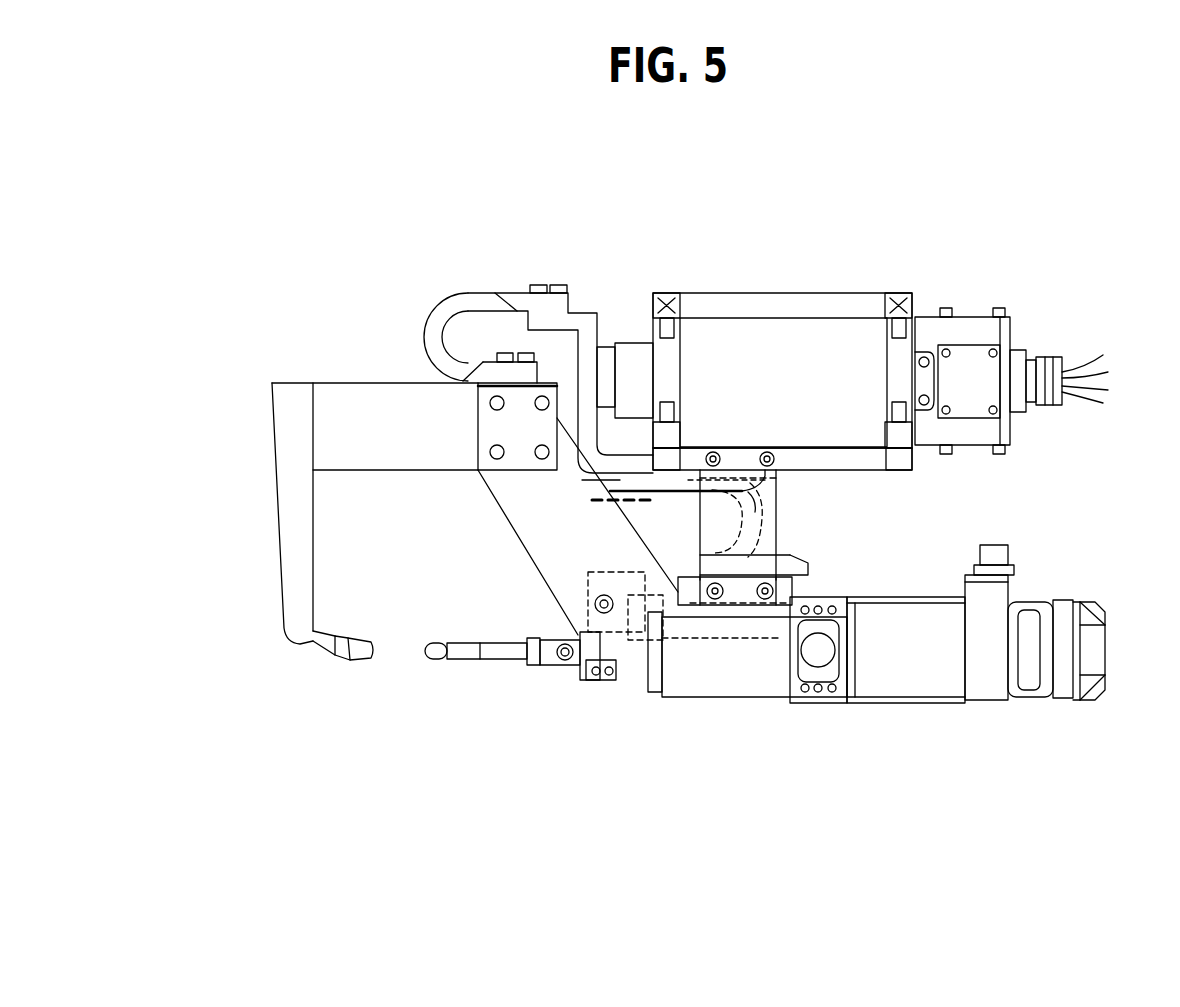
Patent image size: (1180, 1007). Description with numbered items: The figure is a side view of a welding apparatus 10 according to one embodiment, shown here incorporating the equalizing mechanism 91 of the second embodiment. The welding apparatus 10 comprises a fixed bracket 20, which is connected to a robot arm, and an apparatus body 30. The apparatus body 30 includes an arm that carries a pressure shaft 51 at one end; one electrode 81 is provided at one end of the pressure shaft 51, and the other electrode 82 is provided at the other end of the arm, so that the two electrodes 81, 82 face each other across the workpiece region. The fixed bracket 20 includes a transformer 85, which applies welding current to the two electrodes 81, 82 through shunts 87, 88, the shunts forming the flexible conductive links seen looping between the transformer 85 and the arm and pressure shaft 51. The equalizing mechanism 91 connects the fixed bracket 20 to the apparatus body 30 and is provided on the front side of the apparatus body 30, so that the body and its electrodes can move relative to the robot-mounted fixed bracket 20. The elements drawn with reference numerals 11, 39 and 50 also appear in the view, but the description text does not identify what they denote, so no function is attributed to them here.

The welding apparatus 10 is at (275, 201).
The fixed bracket 20 is at (1040, 223).
The apparatus body 30 is at (1027, 825).
The base plate 11 is at (768, 492).
The gun arm 39 is at (368, 405).
The pressurizing actuator 50 is at (814, 703).
The pressure shaft 51 is at (494, 661).
The electrode 81 is at (432, 661).
The electrode 82 is at (358, 663).
The transformer 85 is at (750, 330).
The shunt 87 is at (746, 488).
The shunt 88 is at (471, 296).
The equalizing mechanism 91 is at (793, 592).